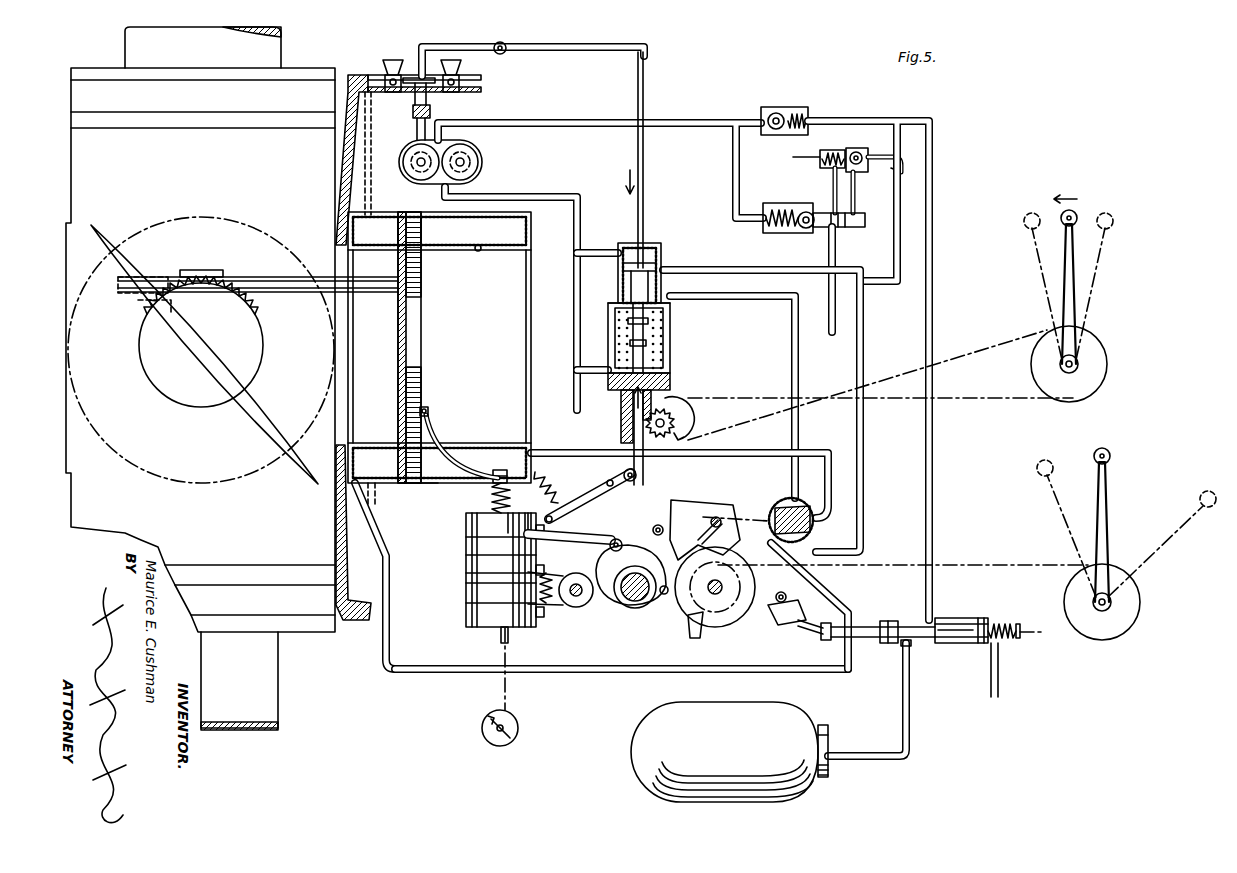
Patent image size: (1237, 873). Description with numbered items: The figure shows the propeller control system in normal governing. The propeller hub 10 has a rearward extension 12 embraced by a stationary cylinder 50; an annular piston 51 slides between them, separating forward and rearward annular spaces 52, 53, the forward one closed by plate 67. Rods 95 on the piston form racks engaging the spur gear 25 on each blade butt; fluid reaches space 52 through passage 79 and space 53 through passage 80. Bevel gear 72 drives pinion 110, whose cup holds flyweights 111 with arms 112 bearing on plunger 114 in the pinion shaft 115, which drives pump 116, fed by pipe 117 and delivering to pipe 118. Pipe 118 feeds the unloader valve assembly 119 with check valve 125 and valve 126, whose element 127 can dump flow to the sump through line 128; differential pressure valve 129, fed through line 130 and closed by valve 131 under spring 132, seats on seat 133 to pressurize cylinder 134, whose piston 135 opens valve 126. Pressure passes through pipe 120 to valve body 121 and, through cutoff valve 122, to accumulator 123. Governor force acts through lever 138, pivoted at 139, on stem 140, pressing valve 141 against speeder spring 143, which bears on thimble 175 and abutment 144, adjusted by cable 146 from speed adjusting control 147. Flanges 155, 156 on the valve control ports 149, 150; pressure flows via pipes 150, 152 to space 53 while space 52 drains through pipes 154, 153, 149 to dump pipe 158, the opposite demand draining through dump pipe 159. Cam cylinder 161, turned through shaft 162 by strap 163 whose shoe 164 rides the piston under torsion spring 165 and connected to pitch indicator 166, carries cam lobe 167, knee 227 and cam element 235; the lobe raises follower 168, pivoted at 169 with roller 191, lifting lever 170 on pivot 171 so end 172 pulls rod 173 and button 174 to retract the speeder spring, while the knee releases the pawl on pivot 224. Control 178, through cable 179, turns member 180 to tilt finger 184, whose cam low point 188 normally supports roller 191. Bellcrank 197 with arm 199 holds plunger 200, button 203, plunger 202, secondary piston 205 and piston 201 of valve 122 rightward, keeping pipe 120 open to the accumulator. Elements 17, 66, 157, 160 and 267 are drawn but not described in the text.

The propeller hub 10 is at (200, 350).
The exhaust pipe / propeller blade 17 is at (283, 50).
The spur gear 25 is at (258, 318).
The rod 95 is at (262, 277).
The plate 67 is at (340, 184).
The bevel pinion 110 is at (478, 86).
The flyweights 111 is at (465, 66).
The arm 112 is at (432, 96).
The plunger 114 is at (415, 108).
The pinion shaft 115 is at (419, 118).
The bevel gear 72 is at (367, 153).
The cylindrical rearward extension 12 is at (482, 218).
The pump 116 is at (486, 156).
The pipe 117 is at (541, 196).
The pipe 118 is at (546, 122).
The lever 138 is at (478, 45).
The fixed pivot 139 is at (508, 53).
The stem 140 is at (647, 73).
The check valve 125 is at (778, 107).
The unloader valve assembly 119 is at (792, 136).
The spring 132 is at (834, 145).
The differential pressure valve 129 is at (860, 149).
The valve 131 is at (898, 155).
The line 130 is at (895, 170).
The seat 133 is at (862, 178).
The valve 126 is at (768, 203).
The valve element 127 is at (808, 212).
The small cylinder 134 is at (870, 216).
The piston 135 is at (868, 222).
The line 128 is at (840, 243).
The pipe 120 is at (935, 182).
The port and pipe 149 is at (668, 268).
The port and pipe 150 is at (793, 346).
The pipe 152 is at (758, 446).
The rotary valve 157 is at (800, 499).
The pipe 153 is at (815, 586).
The pipe 154 is at (612, 668).
The fluid feed passage 79 is at (373, 533).
The plunger 200 is at (880, 648).
The operating button 203 is at (826, 641).
The secondary piston 205 is at (905, 613).
The bellcrank arm 199 is at (805, 631).
The bellcrank 197 is at (790, 603).
The cutoff valve 122 is at (949, 611).
The piston 201 is at (965, 645).
The plunger 202 is at (926, 646).
The spring 267 is at (1020, 645).
The accumulator 123 is at (729, 752).
The pitch indicator 166 is at (515, 717).
The passage 80 is at (535, 456).
The forward annular space 52 is at (375, 231).
The rearward annular space 53 is at (473, 231).
The cylinder 50 is at (482, 251).
The annular piston 51 is at (423, 299).
The shaft 162 is at (507, 466).
The flexible strap 163 is at (445, 440).
The shoe 164 is at (432, 410).
The plate edge 66 is at (428, 485).
The torsion spring 165 is at (492, 497).
The cam cylinder 161 is at (468, 529).
The cam lobe 167 is at (500, 551).
The cam knee 227 is at (480, 586).
The cam element 235 is at (503, 628).
The fixed pivot 224 is at (577, 601).
The follower 168 is at (541, 539).
The lever 170 is at (566, 517).
The fixed pivot 171 is at (608, 481).
The follower end 172 is at (640, 479).
The pull rod 173 is at (633, 436).
The roller follower 191 is at (620, 538).
The fixed pivot 169 is at (661, 524).
The central low point 188 is at (625, 549).
The finger 184 is at (665, 601).
The member 180 is at (742, 622).
The valve body 121 is at (664, 248).
The flange 155 is at (652, 262).
The valve 141 is at (640, 281).
The flange 156 is at (620, 301).
The speeder spring 143 is at (675, 341).
The chamber 160 is at (672, 309).
The button 174 is at (673, 361).
The thimble 175 is at (635, 339).
The abutment 144 is at (673, 391).
The cable 146 is at (710, 414).
The speed adjusting control 147 is at (1080, 296).
The control 178 is at (1110, 481).
The cable 179 is at (1018, 558).
The dump pipe 158 is at (592, 250).
The dump pipe 159 is at (598, 373).